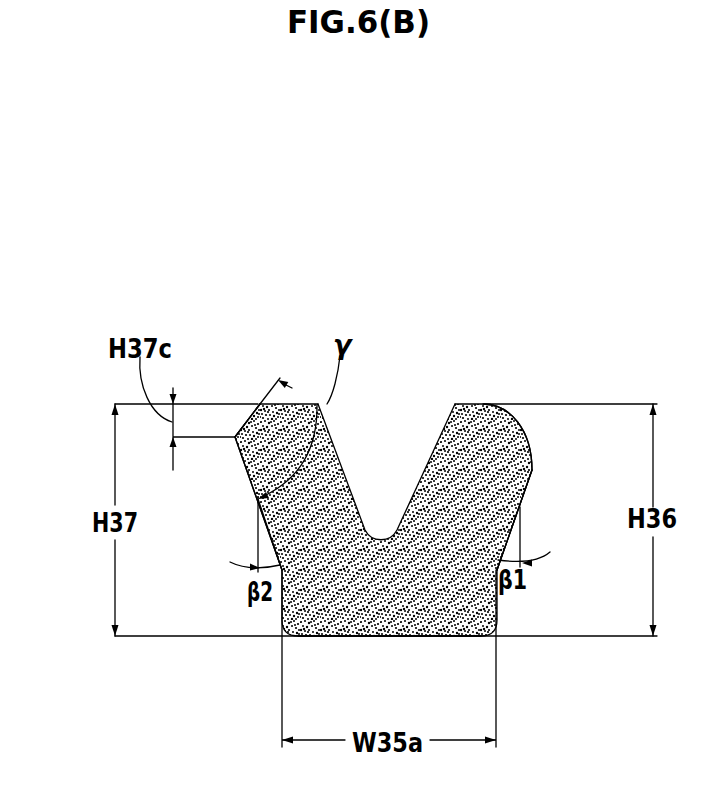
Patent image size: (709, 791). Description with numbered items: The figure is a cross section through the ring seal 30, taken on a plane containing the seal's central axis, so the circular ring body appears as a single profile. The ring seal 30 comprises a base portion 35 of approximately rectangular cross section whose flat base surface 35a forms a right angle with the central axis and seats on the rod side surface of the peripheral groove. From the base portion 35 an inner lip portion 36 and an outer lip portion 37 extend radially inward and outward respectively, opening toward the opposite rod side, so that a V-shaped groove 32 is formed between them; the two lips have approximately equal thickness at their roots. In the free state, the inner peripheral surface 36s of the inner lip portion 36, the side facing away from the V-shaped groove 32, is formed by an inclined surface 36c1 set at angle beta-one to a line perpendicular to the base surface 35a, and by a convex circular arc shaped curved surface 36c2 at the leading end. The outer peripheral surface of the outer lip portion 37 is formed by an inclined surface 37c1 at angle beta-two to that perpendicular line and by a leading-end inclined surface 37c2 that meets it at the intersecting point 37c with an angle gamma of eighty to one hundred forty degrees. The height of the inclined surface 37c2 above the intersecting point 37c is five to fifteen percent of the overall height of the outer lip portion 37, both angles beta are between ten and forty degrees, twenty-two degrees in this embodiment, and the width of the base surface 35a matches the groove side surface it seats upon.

The ring seal 30 is at (420, 327).
The V-shaped groove 32 is at (401, 464).
The base portion 35 is at (431, 650).
The base surface 35a is at (467, 636).
The inner lip portion 36 is at (497, 392).
The inclined surface 36c1 is at (478, 544).
The inner peripheral surface 36s is at (567, 532).
The convex circular arc shaped curved surface 36c2 is at (527, 438).
The outer lip portion 37 is at (272, 346).
The intersecting point 37c is at (235, 437).
The inclined surface 37c1 is at (253, 488).
The inclined surface 37c2 is at (246, 418).